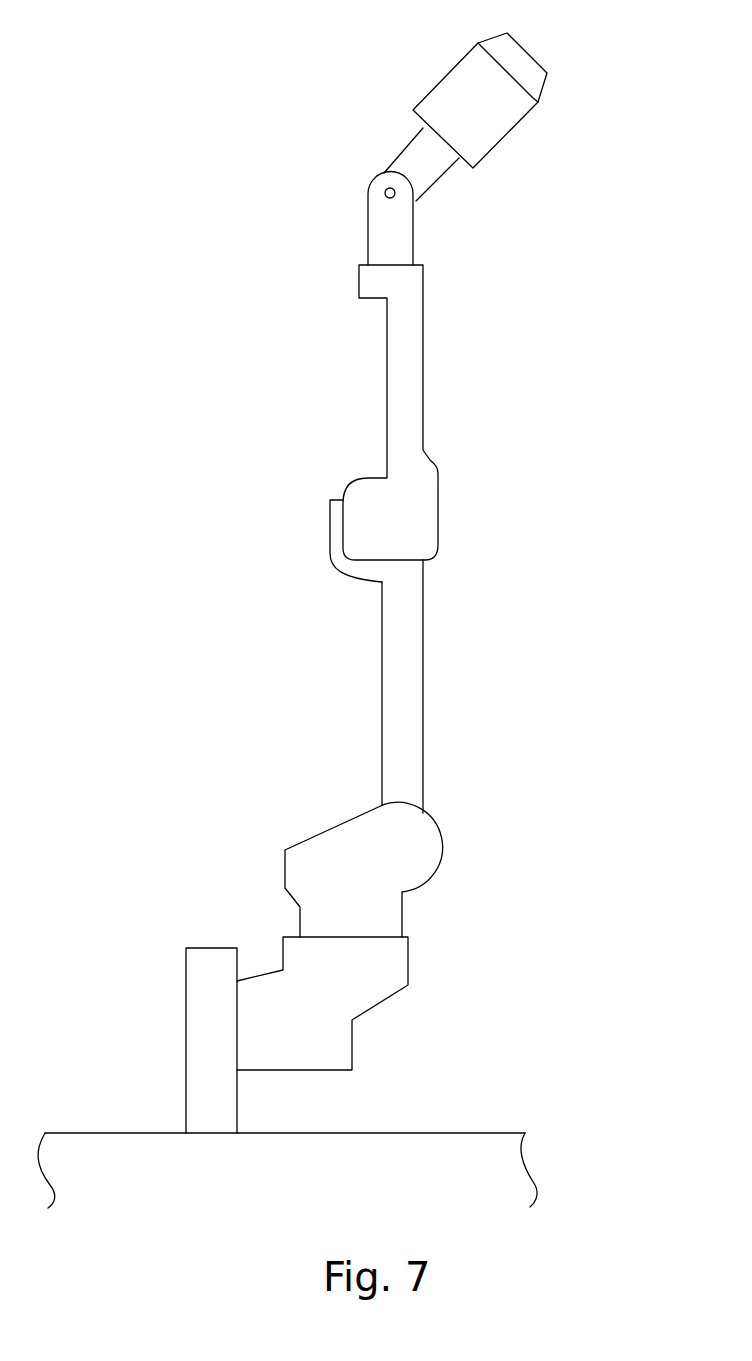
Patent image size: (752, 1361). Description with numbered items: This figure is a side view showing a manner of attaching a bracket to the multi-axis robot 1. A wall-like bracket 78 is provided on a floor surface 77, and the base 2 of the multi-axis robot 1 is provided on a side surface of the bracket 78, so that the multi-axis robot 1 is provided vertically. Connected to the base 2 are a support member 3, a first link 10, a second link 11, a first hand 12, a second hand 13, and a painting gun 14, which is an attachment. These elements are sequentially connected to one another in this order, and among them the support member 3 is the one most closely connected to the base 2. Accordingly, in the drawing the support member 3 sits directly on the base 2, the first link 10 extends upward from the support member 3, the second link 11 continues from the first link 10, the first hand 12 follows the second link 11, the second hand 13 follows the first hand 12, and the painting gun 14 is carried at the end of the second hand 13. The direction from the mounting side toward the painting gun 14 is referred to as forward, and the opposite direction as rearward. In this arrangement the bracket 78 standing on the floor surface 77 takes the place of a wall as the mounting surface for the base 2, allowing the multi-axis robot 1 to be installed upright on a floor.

The multi-axis robot 1 is at (513, 523).
The base 2 is at (372, 995).
The support member 3 is at (418, 852).
The first link 10 is at (412, 655).
The second link 11 is at (410, 387).
The first hand 12 is at (403, 238).
The second hand 13 is at (417, 158).
The painting gun 14 is at (498, 126).
The floor surface 77 is at (479, 1133).
The bracket 78 is at (197, 1027).